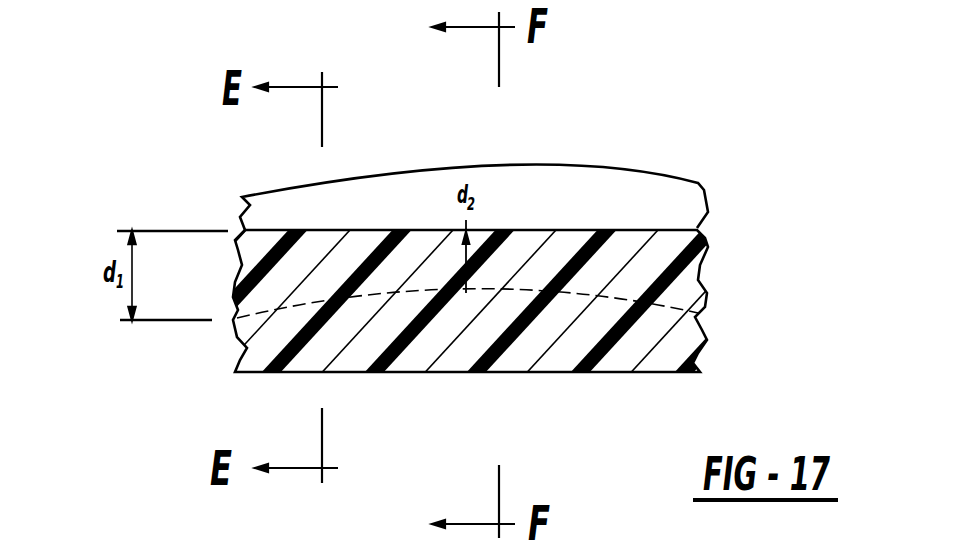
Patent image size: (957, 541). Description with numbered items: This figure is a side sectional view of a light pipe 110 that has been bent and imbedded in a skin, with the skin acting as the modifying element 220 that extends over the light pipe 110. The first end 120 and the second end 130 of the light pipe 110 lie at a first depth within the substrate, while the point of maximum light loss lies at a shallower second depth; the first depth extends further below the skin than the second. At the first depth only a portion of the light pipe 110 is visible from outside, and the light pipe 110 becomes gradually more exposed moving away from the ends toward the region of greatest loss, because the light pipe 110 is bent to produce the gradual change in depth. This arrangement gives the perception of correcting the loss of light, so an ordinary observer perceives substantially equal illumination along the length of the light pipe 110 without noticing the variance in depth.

The light pipe 110 is at (485, 158).
The first end 120 is at (198, 358).
The second end 130 is at (757, 302).
The modifying element 220 is at (433, 350).